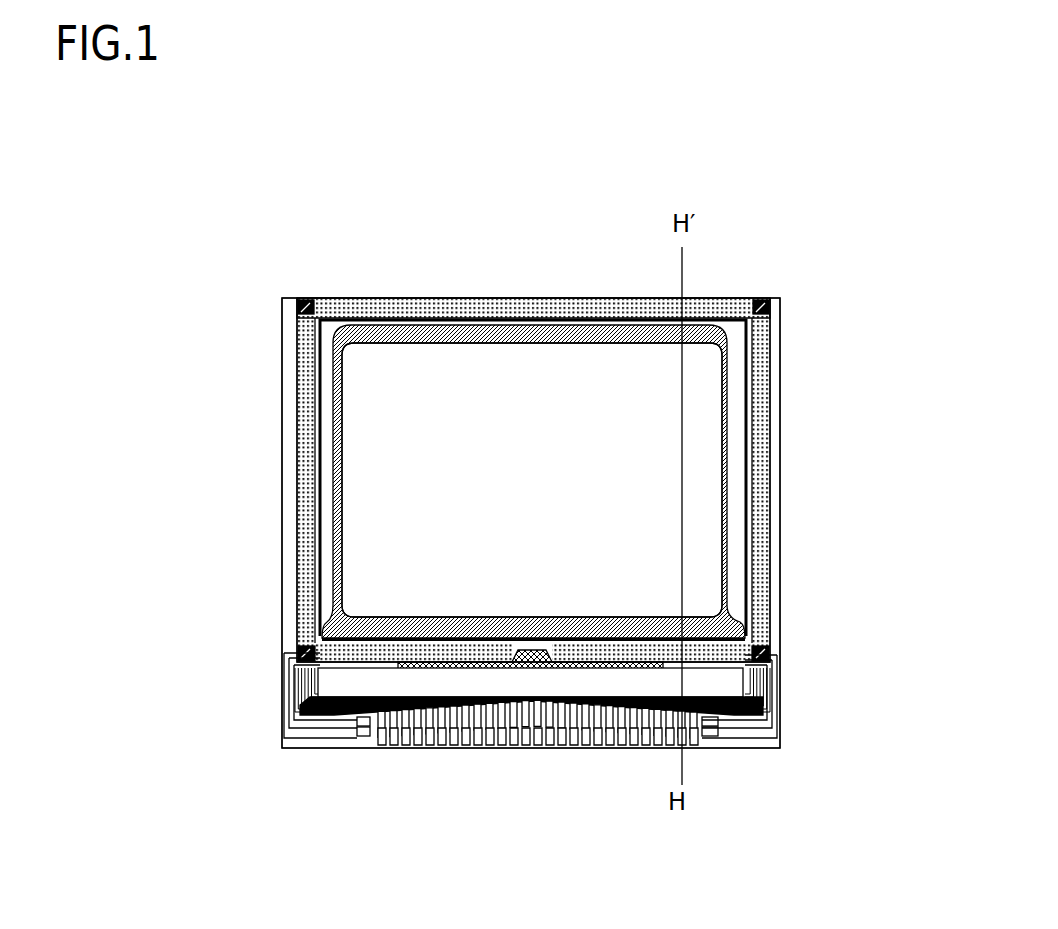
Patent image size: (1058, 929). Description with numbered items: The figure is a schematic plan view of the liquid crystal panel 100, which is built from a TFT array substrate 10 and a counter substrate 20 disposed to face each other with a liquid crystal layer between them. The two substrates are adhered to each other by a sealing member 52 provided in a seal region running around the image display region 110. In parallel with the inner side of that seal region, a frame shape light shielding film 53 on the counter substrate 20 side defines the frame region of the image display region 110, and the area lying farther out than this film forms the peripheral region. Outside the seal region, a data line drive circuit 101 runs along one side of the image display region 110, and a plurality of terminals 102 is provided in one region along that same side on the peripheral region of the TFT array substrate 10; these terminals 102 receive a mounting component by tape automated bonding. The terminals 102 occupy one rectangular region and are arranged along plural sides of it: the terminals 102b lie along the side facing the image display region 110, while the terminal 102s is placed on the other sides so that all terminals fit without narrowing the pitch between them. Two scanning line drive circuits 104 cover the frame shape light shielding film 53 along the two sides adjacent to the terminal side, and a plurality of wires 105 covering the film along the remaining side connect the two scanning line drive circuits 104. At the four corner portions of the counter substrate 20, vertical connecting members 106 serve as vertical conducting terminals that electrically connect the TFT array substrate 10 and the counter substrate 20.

The liquid crystal panel 100 is at (647, 178).
The TFT array substrate 10 is at (400, 298).
The counter substrate 20 is at (527, 298).
The wires 105 is at (441, 298).
The vertical connecting members 106 is at (298, 300).
The sealing member 52 is at (762, 426).
The frame shape light shielding film 53 is at (733, 617).
The scanning line drive circuits 104 is at (735, 522).
The image display region 110 is at (532, 480).
The data line drive circuit 101 is at (333, 712).
The terminals 102 is at (537, 793).
The terminal 102s is at (364, 737).
The terminals 102b is at (487, 746).